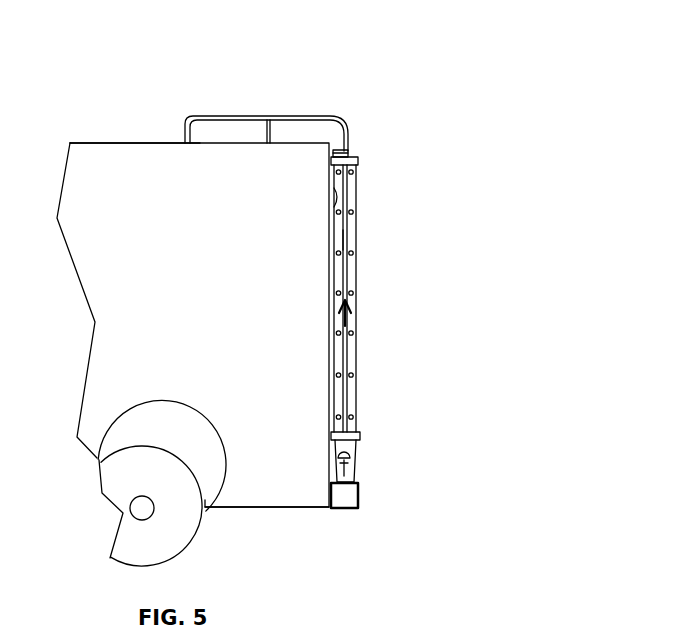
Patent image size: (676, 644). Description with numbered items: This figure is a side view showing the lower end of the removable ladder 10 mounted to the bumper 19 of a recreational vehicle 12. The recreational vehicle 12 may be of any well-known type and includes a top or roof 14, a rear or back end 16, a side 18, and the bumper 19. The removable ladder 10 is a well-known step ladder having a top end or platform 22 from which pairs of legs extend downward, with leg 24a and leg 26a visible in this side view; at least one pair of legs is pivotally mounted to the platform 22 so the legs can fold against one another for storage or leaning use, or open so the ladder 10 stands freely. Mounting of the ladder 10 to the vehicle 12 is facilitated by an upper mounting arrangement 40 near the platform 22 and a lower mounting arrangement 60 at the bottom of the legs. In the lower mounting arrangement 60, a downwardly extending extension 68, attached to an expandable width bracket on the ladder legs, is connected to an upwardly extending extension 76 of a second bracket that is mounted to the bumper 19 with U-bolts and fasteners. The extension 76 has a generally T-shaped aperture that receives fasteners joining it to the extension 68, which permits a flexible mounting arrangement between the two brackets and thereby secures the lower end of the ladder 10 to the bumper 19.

The removable ladder 10 is at (460, 177).
The recreational vehicle 12 is at (144, 108).
The top or roof 14 is at (100, 143).
The rear or back end 16 is at (333, 205).
The side 18 is at (242, 493).
The bumper 19 is at (350, 497).
The top end or platform 22 is at (358, 162).
The leg 24a is at (350, 237).
The leg 26a is at (338, 240).
The upper mounting arrangement 40 is at (361, 118).
The lower mounting arrangement 60 is at (370, 462).
The extension 68 is at (348, 446).
The extension 76 is at (350, 476).